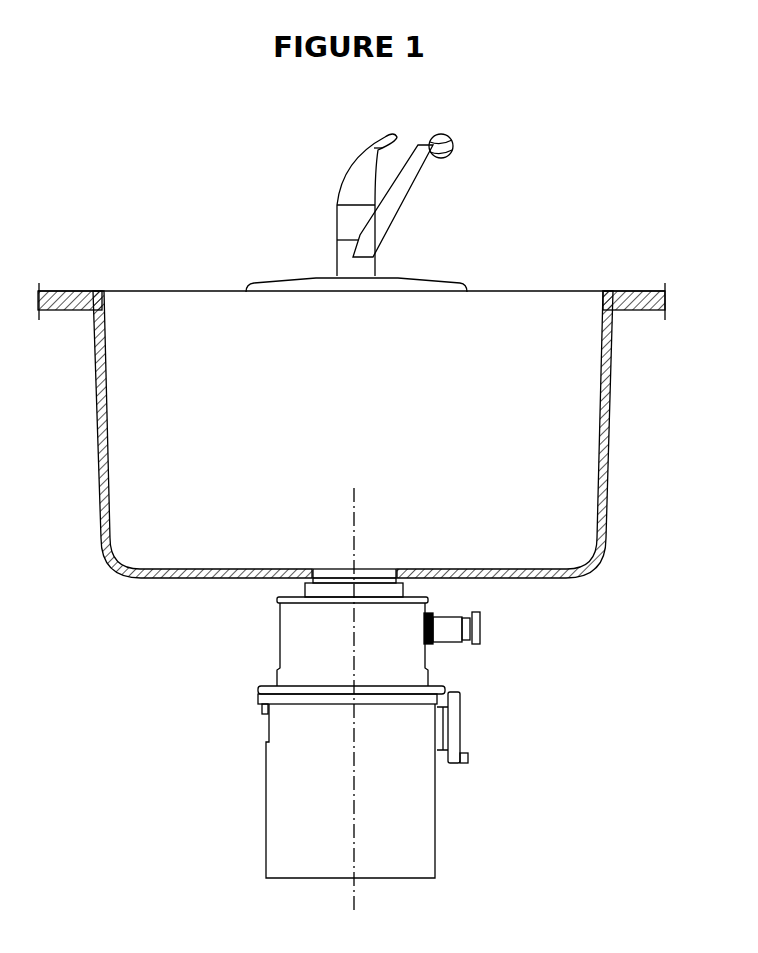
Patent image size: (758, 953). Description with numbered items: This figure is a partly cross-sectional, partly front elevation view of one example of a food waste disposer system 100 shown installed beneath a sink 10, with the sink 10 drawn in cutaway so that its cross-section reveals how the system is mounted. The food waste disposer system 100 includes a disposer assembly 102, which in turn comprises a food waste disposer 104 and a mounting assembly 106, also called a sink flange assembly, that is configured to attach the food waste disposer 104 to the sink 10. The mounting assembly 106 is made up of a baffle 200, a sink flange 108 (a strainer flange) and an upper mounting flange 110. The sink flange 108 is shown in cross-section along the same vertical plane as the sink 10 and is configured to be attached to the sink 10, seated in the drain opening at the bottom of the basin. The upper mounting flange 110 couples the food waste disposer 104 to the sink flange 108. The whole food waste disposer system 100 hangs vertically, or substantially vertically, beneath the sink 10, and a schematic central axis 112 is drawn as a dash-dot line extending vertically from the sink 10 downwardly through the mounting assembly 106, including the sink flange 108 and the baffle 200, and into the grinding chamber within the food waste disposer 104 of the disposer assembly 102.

The sink 10 is at (176, 337).
The food waste disposer system 100 is at (386, 703).
The disposer assembly 102 is at (302, 786).
The food waste disposer 104 is at (267, 815).
The mounting assembly 106 is at (255, 590).
The sink flange 108 is at (318, 568).
The upper mounting flange 110 is at (394, 590).
The central axis 112 is at (355, 889).
The baffle 200 is at (373, 568).